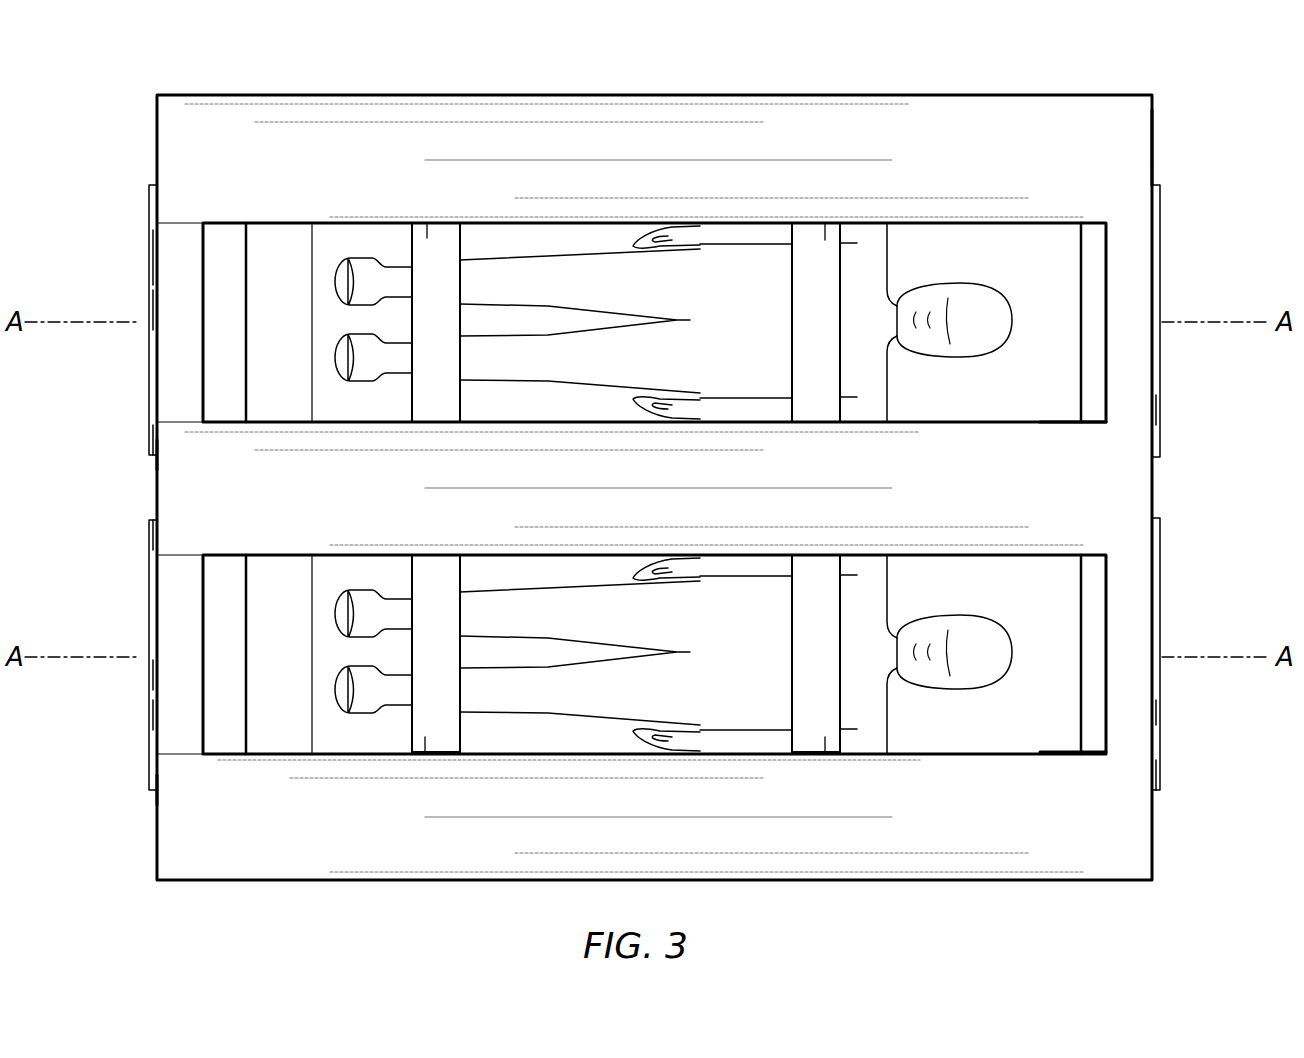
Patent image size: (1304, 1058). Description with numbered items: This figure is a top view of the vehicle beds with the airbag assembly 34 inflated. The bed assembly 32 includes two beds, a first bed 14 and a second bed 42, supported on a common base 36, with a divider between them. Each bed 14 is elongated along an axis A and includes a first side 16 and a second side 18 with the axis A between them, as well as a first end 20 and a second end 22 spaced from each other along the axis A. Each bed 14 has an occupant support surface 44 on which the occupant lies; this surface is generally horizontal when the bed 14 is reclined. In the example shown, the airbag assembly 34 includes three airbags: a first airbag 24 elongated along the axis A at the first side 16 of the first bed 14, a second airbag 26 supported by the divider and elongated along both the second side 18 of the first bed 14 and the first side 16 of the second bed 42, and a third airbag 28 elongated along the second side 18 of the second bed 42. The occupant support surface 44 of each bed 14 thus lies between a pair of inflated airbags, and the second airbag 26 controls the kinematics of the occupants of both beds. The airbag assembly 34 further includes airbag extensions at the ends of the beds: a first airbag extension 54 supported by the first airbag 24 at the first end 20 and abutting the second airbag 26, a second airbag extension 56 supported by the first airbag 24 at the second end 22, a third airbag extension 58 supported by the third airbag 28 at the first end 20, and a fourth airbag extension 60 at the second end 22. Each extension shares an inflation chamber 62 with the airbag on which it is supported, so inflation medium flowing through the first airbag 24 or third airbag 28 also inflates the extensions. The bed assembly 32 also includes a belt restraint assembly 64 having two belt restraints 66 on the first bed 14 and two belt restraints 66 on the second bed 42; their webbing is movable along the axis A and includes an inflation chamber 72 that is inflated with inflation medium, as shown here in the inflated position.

The vehicle bed 14 is at (152, 257).
The first side 16 is at (152, 188).
The second side 18 is at (152, 458).
The first end 20 is at (152, 440).
The second end 22 is at (1157, 445).
The first airbag 24 is at (1127, 95).
The second airbag 26 is at (1050, 420).
The third airbag 28 is at (1050, 750).
The bed assembly 32 is at (1220, 162).
The airbag assembly 34 is at (1160, 136).
The base 36 is at (1160, 770).
The second bed 42 is at (152, 715).
The occupant support surface 44 is at (1050, 265).
The first airbag extension 54 is at (152, 302).
The second airbag extension 56 is at (1157, 410).
The third airbag extension 58 is at (152, 675).
The fourth airbag extension 60 is at (1160, 712).
The inflation chamber 62 is at (1045, 132).
The belt restraint assembly 64 is at (855, 297).
The belt restraint 66 is at (455, 246).
The inflation chamber 72 is at (427, 238).